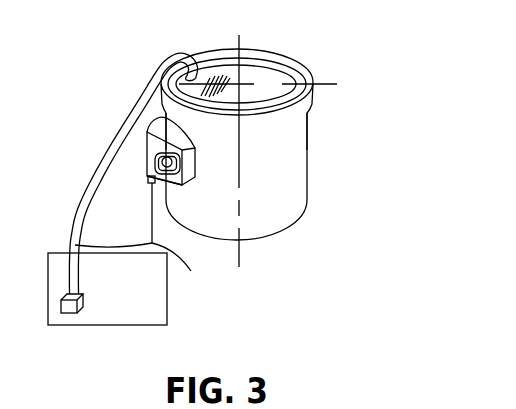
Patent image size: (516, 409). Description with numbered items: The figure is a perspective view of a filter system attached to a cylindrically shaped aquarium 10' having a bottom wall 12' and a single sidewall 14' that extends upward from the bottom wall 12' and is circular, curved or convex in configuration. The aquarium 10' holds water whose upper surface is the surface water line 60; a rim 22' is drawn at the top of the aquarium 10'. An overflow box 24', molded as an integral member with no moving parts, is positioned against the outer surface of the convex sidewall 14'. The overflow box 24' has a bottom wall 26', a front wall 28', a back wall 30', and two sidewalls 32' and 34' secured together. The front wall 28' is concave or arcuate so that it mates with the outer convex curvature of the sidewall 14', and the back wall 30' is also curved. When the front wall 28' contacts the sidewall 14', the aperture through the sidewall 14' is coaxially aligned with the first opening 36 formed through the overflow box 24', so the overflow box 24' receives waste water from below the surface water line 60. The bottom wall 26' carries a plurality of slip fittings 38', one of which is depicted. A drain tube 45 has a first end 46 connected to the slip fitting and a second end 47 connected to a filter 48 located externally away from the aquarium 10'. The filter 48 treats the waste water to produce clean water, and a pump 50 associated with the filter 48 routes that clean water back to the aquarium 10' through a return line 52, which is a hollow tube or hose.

The aquarium 10' is at (215, 177).
The bottom wall 12' is at (239, 176).
The sidewall 14' is at (260, 151).
The rim 22' is at (261, 79).
The overflow box 24' is at (236, 102).
The bottom wall 26' is at (179, 197).
The front wall 28' is at (236, 131).
The back wall 30' is at (127, 148).
The sidewall 32' is at (151, 111).
The sidewall 34' is at (207, 170).
The first opening 36 is at (153, 153).
The slip fitting 38' is at (81, 207).
The drain tube 45 is at (181, 264).
The first end 46 is at (150, 184).
The second end 47 is at (75, 245).
The filter 48 is at (167, 304).
The pump 50 is at (80, 316).
The return line 52 is at (92, 172).
The surface water line 60 is at (280, 96).